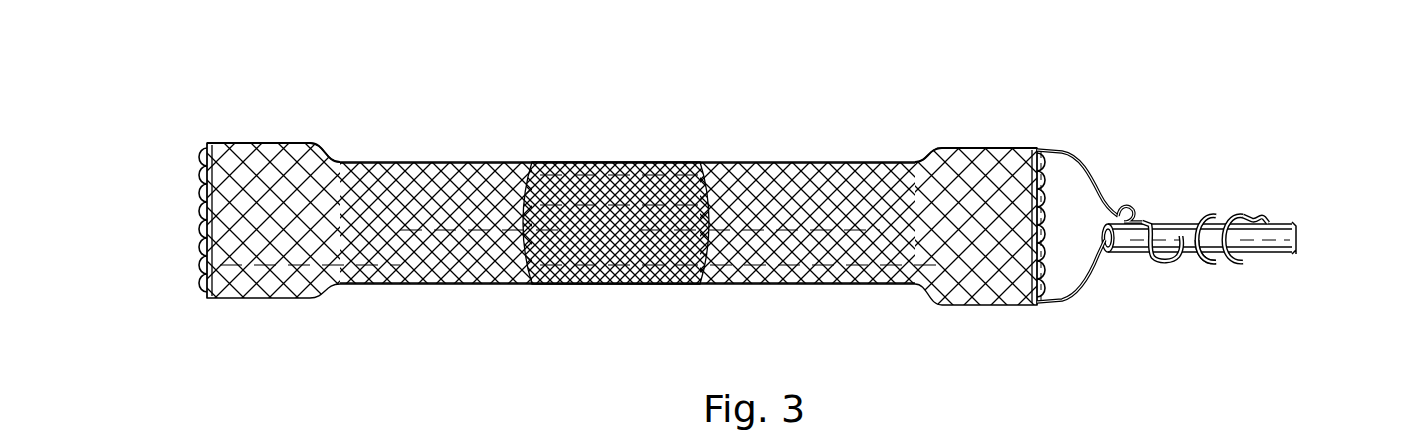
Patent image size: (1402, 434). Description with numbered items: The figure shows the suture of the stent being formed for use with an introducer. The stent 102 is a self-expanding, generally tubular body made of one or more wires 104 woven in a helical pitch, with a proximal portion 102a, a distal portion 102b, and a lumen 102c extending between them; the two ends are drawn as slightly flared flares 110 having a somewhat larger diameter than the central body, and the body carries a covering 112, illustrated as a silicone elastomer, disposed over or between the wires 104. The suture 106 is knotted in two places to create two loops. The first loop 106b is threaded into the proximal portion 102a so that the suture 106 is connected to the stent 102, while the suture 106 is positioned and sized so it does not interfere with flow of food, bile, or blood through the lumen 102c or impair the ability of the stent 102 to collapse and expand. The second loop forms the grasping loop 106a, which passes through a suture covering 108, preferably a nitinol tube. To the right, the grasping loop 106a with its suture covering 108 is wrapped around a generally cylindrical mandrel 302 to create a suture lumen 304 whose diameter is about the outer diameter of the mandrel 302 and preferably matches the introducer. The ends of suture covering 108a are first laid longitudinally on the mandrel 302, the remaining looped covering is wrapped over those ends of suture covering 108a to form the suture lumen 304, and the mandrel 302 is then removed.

The stent 102 is at (405, 285).
The proximal portion 102a is at (1008, 305).
The distal portion 102b is at (222, 298).
The lumen 102c is at (193, 270).
The wires 104 is at (563, 285).
The suture 106 is at (1144, 221).
The grasping loop 106a is at (1200, 262).
The first loop 106b is at (1090, 280).
The suture covering 108 is at (1212, 243).
The ends of suture covering 108a is at (1140, 222).
The flares 110 is at (262, 143).
The covering 112 is at (458, 160).
The mandrel 302 is at (1230, 270).
The suture lumen 304 is at (1285, 225).